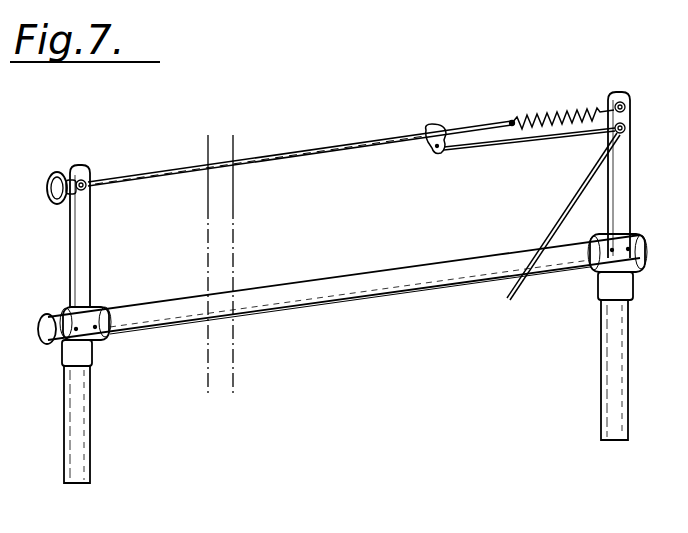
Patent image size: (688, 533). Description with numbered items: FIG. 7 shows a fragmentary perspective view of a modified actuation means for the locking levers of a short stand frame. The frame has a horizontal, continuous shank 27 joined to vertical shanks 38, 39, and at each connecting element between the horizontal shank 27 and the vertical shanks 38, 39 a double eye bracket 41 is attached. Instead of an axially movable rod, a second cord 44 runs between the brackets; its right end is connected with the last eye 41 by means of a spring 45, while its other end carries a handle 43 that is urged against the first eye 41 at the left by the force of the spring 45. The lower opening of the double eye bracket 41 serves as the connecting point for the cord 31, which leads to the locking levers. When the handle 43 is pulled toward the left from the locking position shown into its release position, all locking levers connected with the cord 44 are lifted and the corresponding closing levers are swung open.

The horizontal continuous shank 27 is at (325, 291).
The cord 31 is at (518, 290).
The vertical shank 38 is at (76, 433).
The vertical shank 39 is at (605, 377).
The double eye bracket 41 is at (622, 118).
The handle 43 is at (55, 172).
The second cord 44 is at (327, 151).
The spring 45 is at (540, 112).